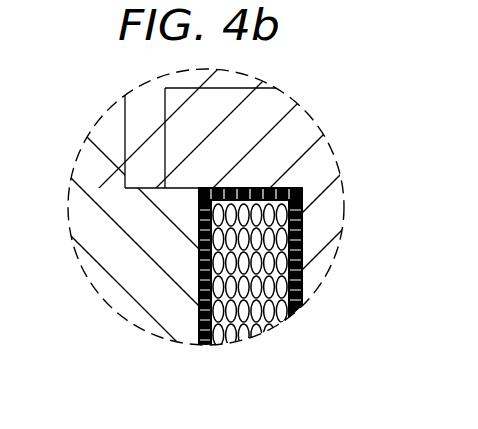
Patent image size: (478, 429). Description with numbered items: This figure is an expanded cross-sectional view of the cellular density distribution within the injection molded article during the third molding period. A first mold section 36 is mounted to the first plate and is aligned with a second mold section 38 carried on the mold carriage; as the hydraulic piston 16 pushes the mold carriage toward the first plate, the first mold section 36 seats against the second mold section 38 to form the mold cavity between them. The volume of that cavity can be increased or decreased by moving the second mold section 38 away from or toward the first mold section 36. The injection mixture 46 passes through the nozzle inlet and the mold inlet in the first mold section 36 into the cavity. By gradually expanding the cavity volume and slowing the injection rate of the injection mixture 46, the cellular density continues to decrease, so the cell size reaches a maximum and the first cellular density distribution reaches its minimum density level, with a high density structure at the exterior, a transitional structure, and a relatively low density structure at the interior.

The hydraulic piston 16 is at (200, 239).
The first mold section 36 is at (100, 129).
The second mold section 38 is at (270, 98).
The injection mixture 46 is at (275, 188).